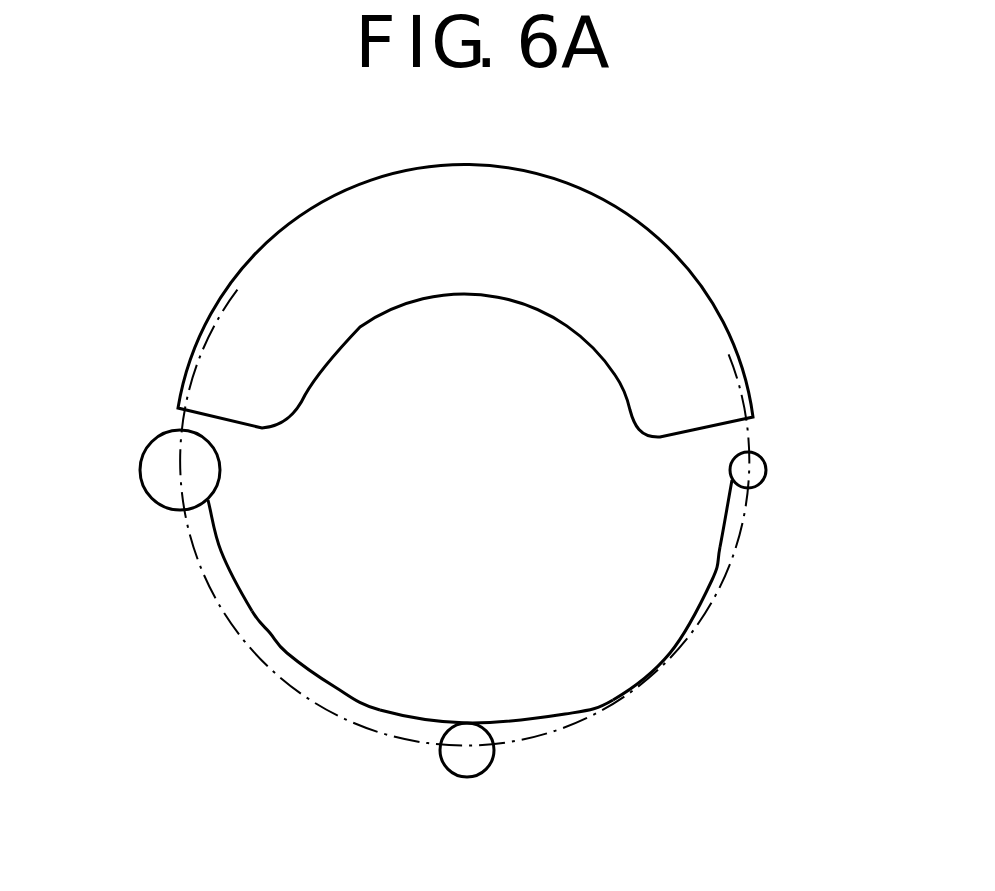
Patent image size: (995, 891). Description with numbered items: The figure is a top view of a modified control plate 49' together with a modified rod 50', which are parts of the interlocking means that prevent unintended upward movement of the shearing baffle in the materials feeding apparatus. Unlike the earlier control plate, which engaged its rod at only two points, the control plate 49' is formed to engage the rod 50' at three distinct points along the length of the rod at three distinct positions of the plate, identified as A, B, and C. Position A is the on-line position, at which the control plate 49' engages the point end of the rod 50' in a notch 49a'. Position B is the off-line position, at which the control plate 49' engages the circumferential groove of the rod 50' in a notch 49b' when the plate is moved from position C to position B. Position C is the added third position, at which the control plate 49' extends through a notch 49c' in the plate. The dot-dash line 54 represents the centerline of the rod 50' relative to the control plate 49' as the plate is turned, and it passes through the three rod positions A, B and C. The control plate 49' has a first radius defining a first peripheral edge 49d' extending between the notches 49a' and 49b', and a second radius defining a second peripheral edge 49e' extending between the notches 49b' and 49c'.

The control plate 49' is at (478, 301).
The notch 49a' is at (685, 507).
The notch 49b' is at (496, 682).
The notch 49c' is at (269, 537).
The first peripheral edge 49d' is at (727, 623).
The second peripheral edge 49e' is at (284, 676).
The rod 50' is at (453, 642).
The centerline 54 is at (670, 662).
The on-line position A is at (780, 433).
The off-line position B is at (445, 782).
The third position C is at (142, 412).